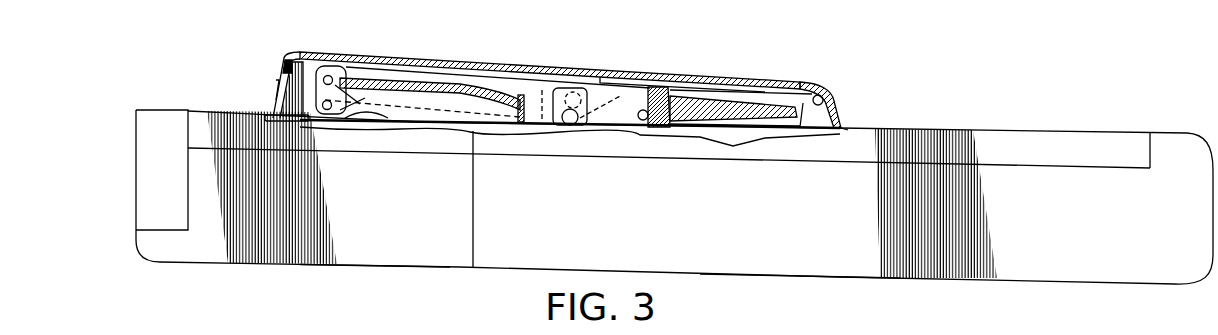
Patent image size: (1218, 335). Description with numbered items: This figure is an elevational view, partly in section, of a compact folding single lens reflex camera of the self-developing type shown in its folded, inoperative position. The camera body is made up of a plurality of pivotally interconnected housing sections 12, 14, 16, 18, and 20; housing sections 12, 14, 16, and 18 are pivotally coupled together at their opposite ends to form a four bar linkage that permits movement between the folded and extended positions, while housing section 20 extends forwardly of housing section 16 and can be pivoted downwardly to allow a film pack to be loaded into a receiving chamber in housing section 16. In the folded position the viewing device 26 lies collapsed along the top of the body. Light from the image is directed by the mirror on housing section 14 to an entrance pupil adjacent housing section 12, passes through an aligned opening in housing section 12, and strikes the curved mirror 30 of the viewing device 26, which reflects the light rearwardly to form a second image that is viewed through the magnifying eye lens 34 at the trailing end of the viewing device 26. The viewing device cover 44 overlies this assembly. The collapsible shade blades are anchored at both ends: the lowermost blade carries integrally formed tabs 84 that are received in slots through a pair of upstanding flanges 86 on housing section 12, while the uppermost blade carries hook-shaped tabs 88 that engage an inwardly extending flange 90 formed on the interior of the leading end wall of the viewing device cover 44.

The housing section 12 is at (212, 110).
The housing section 14 is at (1046, 127).
The housing section 16 is at (807, 258).
The housing section 18 is at (136, 160).
The housing section 20 is at (387, 242).
The viewing device 26 is at (361, 49).
The curved mirror 30 is at (446, 88).
The magnifying eye lens 34 is at (753, 113).
The viewing device cover 44 is at (706, 78).
The tabs 84 is at (307, 122).
The upstanding flanges 86 is at (280, 113).
The hook-shaped tabs 88 is at (287, 58).
The inwardly extending flange 90 is at (285, 85).